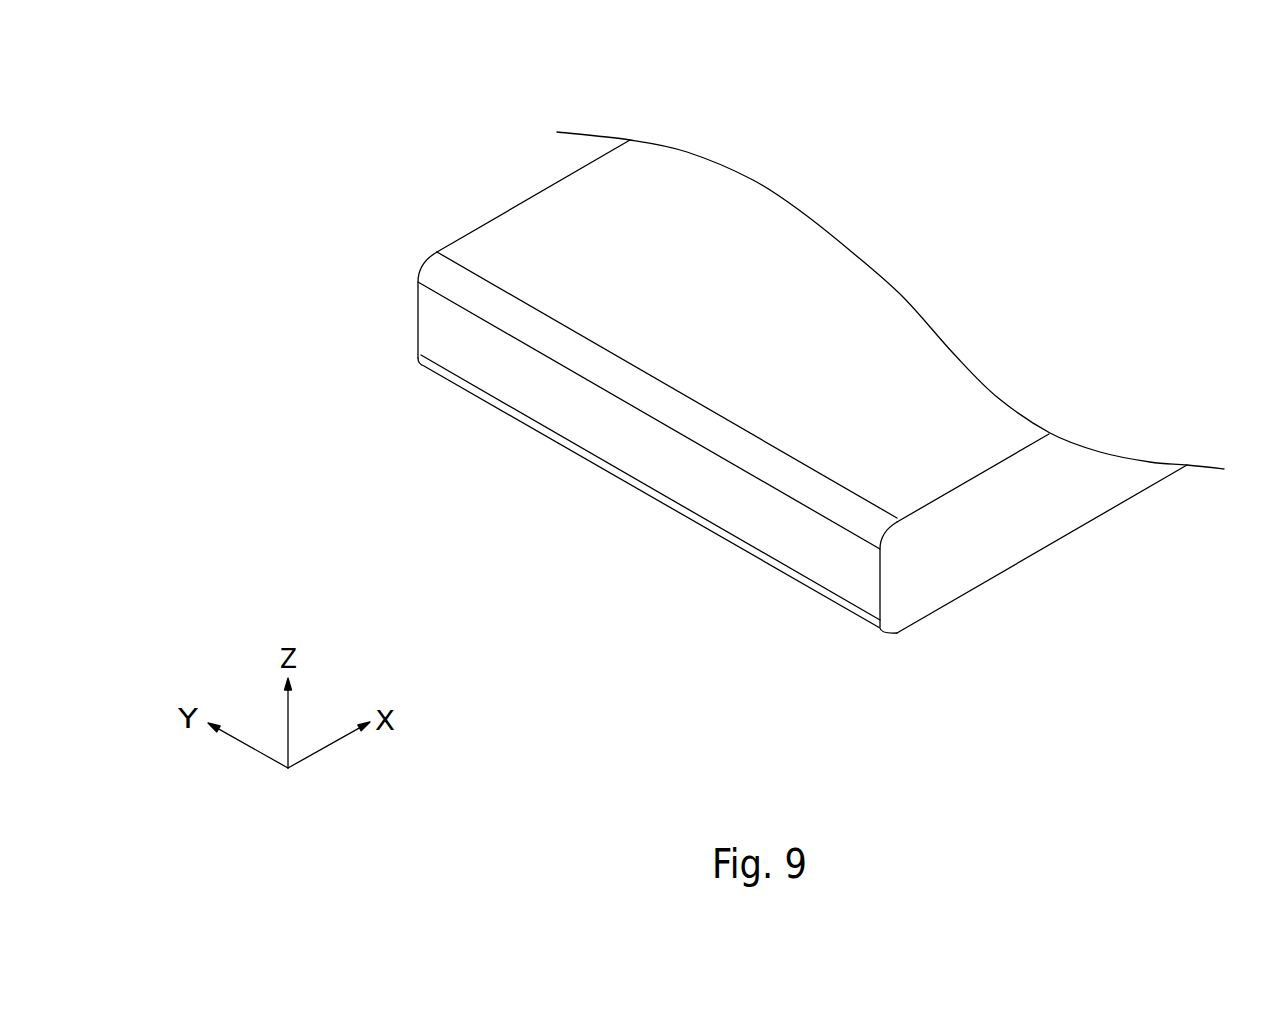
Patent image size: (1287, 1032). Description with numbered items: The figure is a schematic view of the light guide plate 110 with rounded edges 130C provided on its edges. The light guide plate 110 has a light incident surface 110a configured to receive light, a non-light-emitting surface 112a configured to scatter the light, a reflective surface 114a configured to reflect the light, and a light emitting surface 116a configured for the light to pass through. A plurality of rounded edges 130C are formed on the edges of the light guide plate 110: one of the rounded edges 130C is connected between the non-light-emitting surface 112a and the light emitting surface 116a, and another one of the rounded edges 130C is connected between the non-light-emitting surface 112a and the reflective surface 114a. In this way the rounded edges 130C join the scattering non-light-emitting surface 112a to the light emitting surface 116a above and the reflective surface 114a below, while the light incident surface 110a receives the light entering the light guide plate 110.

The light guide plate 110 is at (743, 393).
The light incident surface 110a is at (1020, 505).
The non-light-emitting surface 112a is at (438, 327).
The reflective surface 114a is at (993, 577).
The light emitting surface 116a is at (582, 225).
The rounded edge 130C is at (812, 488).